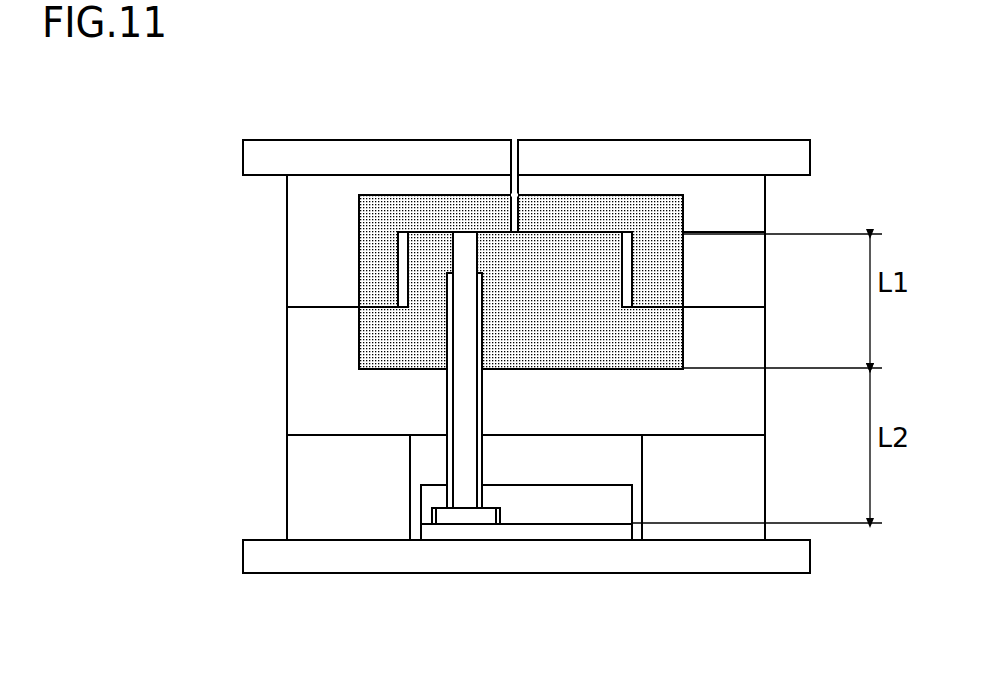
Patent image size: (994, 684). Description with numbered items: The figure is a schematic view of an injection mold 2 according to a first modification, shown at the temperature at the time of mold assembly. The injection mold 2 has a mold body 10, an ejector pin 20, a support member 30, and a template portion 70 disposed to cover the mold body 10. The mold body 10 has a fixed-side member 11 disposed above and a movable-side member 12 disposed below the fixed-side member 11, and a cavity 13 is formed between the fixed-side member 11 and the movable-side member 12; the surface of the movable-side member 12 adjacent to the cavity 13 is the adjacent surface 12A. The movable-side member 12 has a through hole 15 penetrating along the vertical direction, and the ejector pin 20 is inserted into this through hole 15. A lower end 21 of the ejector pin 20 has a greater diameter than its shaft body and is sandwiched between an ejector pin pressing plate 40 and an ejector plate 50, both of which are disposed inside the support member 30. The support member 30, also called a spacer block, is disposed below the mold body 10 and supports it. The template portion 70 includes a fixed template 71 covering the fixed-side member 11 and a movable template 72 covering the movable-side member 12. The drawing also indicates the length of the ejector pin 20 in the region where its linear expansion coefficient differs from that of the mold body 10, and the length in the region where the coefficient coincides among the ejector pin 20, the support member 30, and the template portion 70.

The injection mold 2 is at (206, 97).
The mold body 10 is at (224, 270).
The fixed-side member 11 is at (293, 283).
The movable-side member 12 is at (293, 386).
The adjacent surface 12A is at (485, 232).
The cavity 13 is at (397, 233).
The through hole 15 is at (447, 302).
The ejector pin 20 is at (465, 400).
The lower end 21 is at (468, 524).
The support member 30 is at (293, 497).
The ejector pin pressing plate 40 is at (553, 517).
The ejector plate 50 is at (507, 540).
The template portion 70 is at (730, 85).
The fixed template 71 is at (587, 187).
The movable template 72 is at (722, 328).